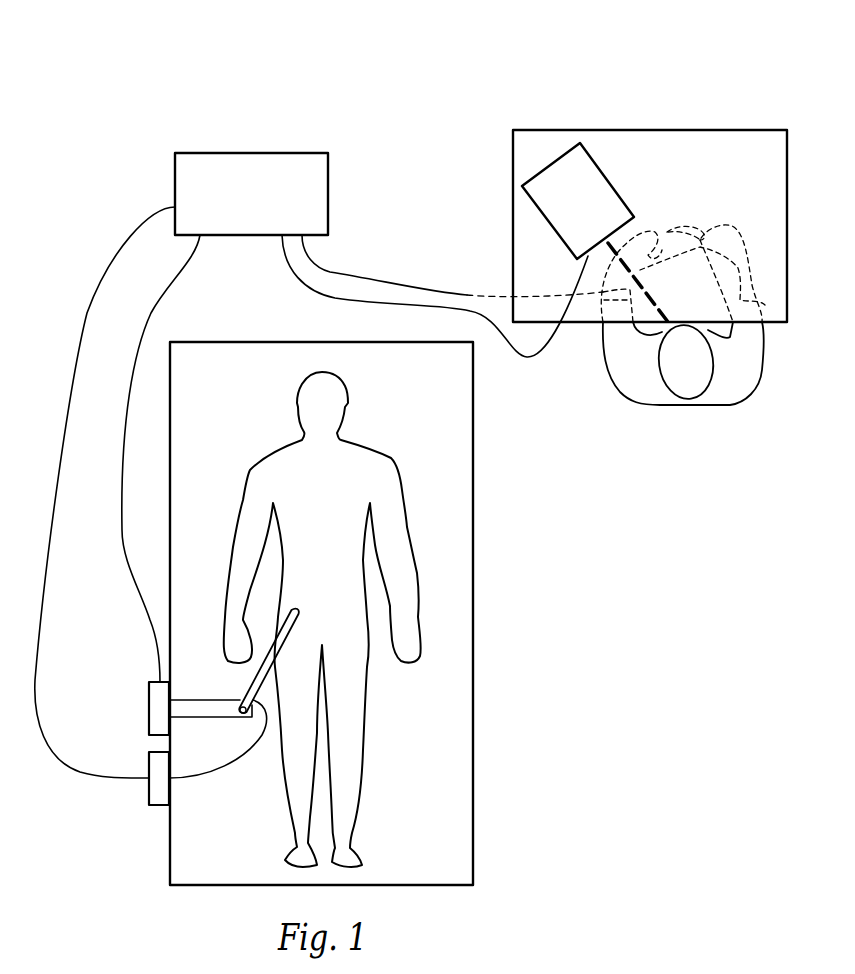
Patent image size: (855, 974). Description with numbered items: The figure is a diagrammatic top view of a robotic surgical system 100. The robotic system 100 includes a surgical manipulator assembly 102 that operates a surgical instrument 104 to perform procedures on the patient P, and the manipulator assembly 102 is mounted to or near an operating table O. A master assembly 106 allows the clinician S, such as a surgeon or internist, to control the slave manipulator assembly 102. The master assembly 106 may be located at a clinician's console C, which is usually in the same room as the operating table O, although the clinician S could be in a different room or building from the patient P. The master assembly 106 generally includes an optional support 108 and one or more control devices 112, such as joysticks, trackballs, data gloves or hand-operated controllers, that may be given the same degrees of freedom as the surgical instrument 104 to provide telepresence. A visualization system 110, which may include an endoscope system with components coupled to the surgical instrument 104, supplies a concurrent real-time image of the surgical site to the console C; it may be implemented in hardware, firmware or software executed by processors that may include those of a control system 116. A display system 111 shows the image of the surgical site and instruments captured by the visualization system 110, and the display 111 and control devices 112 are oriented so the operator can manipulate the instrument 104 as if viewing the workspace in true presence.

The robotic surgical system 100 is at (333, 62).
The surgical manipulator assembly 102 is at (147, 722).
The surgical instrument 104 is at (315, 618).
The master assembly 106 is at (630, 112).
The support 108 is at (747, 135).
The visualization system 110 is at (148, 792).
The display system 111 is at (558, 168).
The control device 112 is at (680, 232).
The control system 116 is at (243, 162).
The patient P is at (367, 460).
The operating table O is at (475, 613).
The clinician's console C is at (685, 135).
The clinician S is at (722, 407).